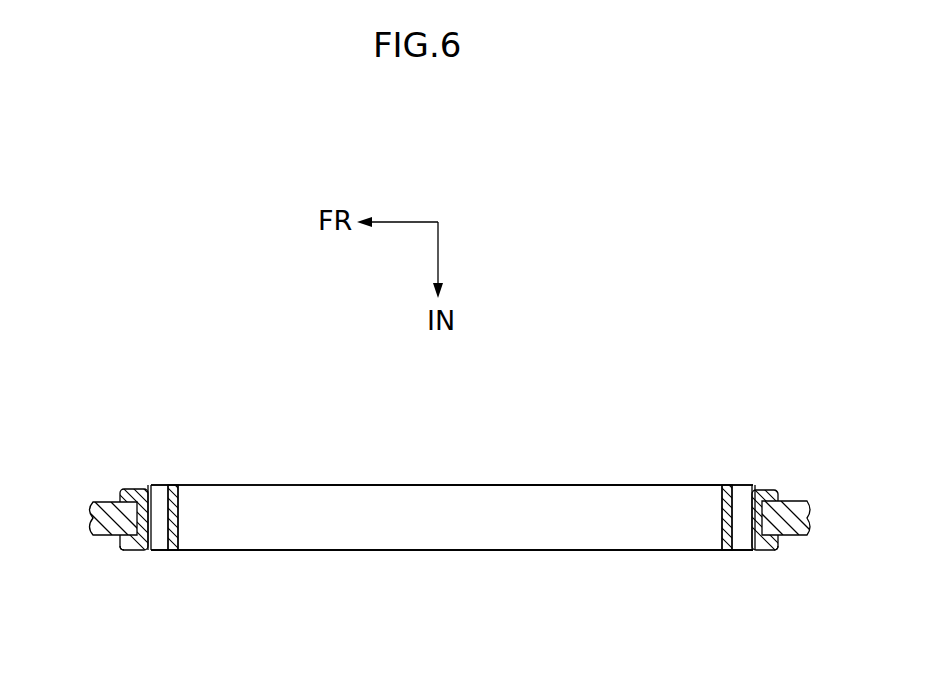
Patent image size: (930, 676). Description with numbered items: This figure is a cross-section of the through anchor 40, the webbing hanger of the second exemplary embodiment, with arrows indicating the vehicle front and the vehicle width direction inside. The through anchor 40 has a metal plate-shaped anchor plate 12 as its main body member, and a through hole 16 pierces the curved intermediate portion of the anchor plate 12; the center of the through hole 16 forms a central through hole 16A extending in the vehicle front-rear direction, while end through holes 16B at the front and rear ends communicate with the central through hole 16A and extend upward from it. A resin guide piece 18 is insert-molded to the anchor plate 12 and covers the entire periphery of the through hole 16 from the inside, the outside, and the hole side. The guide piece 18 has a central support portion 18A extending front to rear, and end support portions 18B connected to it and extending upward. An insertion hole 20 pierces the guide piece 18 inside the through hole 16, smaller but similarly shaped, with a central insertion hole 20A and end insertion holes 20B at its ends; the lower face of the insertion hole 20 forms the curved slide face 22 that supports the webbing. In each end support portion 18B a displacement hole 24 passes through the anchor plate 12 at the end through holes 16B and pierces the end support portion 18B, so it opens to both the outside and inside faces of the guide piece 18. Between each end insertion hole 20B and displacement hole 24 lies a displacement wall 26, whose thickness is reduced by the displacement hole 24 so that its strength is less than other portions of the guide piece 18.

The anchor plate 12 is at (100, 490).
The through hole 16 is at (150, 486).
The central through hole 16A is at (343, 520).
The end through holes 16B is at (759, 490).
The guide piece 18 is at (268, 476).
The central support portion 18A is at (432, 485).
The end support portions 18B is at (127, 551).
The insertion hole 20 is at (587, 505).
The central insertion hole 20A is at (512, 503).
The end insertion holes 20B is at (178, 503).
The slide face 22 is at (445, 538).
The displacement holes 24 is at (158, 487).
The displacement wall 26 is at (178, 527).
The through anchor 40 is at (229, 350).